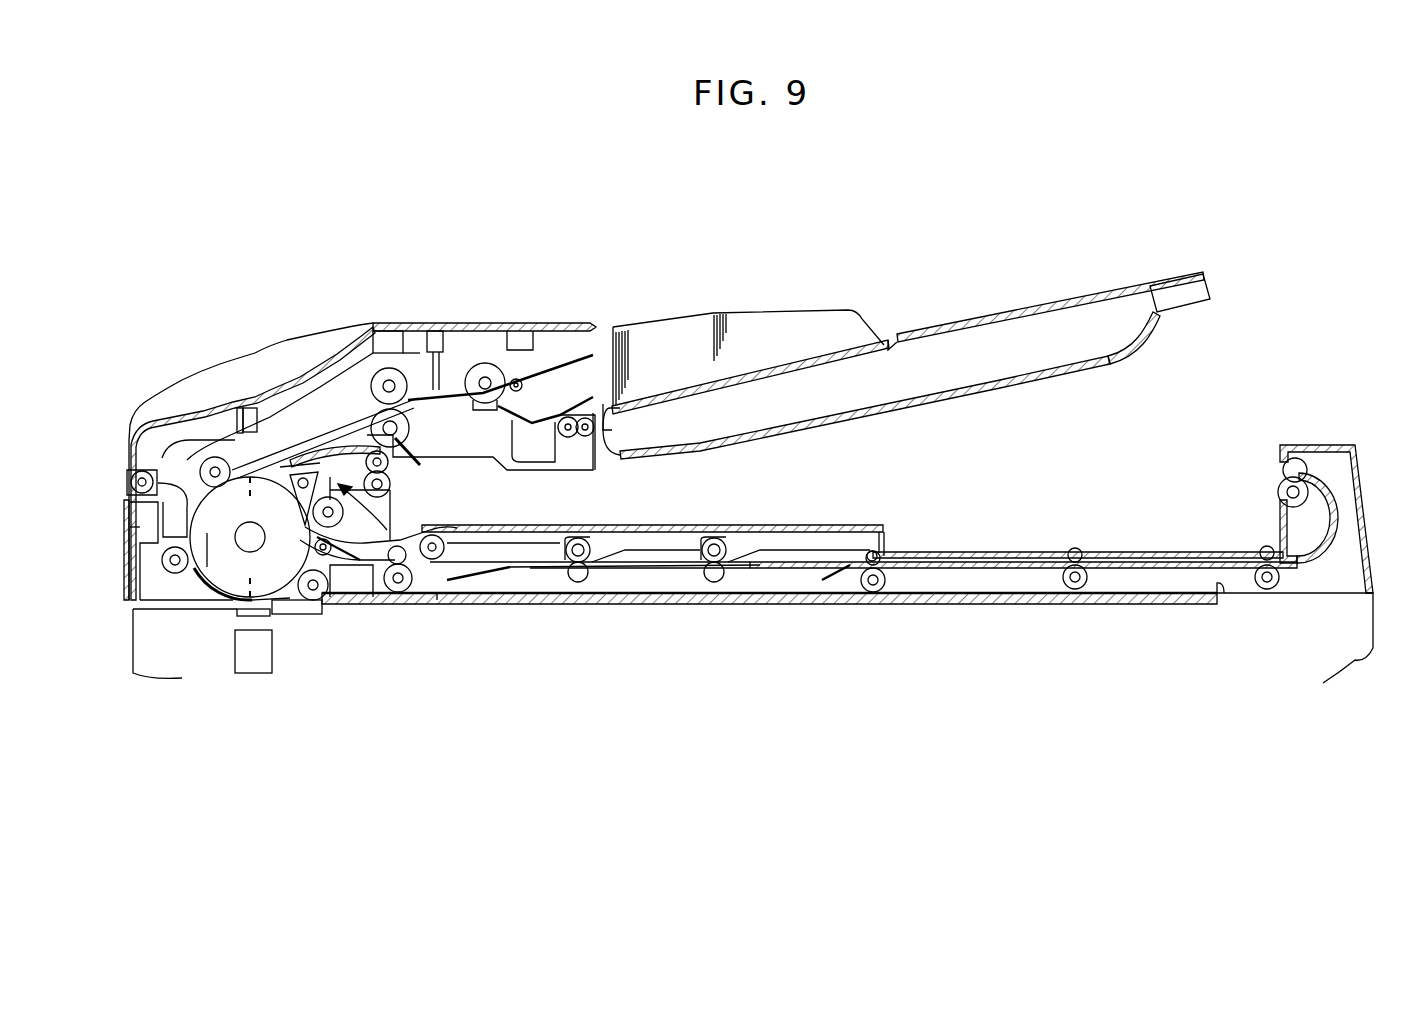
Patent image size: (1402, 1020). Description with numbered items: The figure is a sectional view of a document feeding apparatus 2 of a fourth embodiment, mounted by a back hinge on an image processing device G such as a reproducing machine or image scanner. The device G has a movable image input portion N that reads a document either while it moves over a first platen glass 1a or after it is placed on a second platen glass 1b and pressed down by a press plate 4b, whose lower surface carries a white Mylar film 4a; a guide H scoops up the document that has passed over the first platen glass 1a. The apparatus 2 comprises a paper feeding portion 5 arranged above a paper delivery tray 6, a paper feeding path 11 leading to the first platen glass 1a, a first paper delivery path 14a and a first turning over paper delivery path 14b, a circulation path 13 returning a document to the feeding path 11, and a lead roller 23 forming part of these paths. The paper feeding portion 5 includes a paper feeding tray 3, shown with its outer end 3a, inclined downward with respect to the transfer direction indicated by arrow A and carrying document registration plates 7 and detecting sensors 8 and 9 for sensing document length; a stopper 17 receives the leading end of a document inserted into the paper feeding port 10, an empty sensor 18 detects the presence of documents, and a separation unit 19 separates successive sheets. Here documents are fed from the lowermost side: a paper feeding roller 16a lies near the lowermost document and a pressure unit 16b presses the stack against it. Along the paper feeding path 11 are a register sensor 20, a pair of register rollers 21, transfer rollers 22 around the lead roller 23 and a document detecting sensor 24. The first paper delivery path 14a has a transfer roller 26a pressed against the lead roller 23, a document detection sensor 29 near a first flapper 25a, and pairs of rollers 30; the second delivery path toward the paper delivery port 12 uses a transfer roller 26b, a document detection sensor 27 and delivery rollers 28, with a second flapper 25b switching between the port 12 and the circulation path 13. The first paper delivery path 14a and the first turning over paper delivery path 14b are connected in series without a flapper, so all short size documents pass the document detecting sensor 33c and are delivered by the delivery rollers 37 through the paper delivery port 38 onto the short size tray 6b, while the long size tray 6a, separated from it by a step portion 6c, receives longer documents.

The first platen glass 1a is at (235, 614).
The second platen glass 1b is at (790, 604).
The document feeding apparatus 2 is at (408, 234).
The paper feeding tray 3 is at (1163, 268).
The tray end portion 3a is at (1212, 283).
The white Mylar film 4a is at (437, 604).
The press plate 4b is at (1221, 592).
The paper feeding portion 5 is at (460, 306).
The paper delivery tray 6 is at (862, 459).
The long size tray 6a is at (855, 523).
The short size tray 6b is at (963, 551).
The step portion 6c is at (886, 548).
The document registration plates 7 is at (780, 322).
The detecting sensor 8 is at (906, 355).
The detecting sensor 9 is at (1083, 318).
The paper feeding port 10 is at (597, 392).
The paper feeding path 11 is at (352, 410).
The paper delivery port 12 is at (400, 461).
The circulation path 13 is at (283, 482).
The first paper delivery path 14a is at (470, 572).
The first turning over paper delivery path 14b is at (1010, 572).
The paper feeding roller 16a is at (574, 450).
The pressure unit 16b is at (600, 445).
The stopper 17 is at (573, 447).
The empty sensor 18 is at (537, 425).
The separation unit 19 is at (488, 360).
The register sensor 20 is at (425, 412).
The register rollers 21 is at (388, 366).
The transfer rollers 22 is at (209, 448).
The lead roller 23 is at (138, 512).
The document detecting sensor 24 is at (188, 583).
The first flapper 25a is at (288, 556).
The second flapper 25b is at (298, 492).
The transfer roller 26a is at (313, 601).
The transfer roller 26b is at (366, 535).
The document detection sensor 27 is at (344, 514).
The delivery rollers 28 is at (388, 492).
The document detection sensor 29 is at (353, 582).
The pairs of rollers 30 is at (398, 593).
The document detecting sensor 33c is at (1312, 522).
The delivery rollers 37 is at (1278, 494).
The paper delivery port 38 is at (1283, 474).
The arrow A is at (932, 310).
The image processing device G is at (1373, 648).
The guide H is at (266, 651).
The image input portion N is at (248, 665).